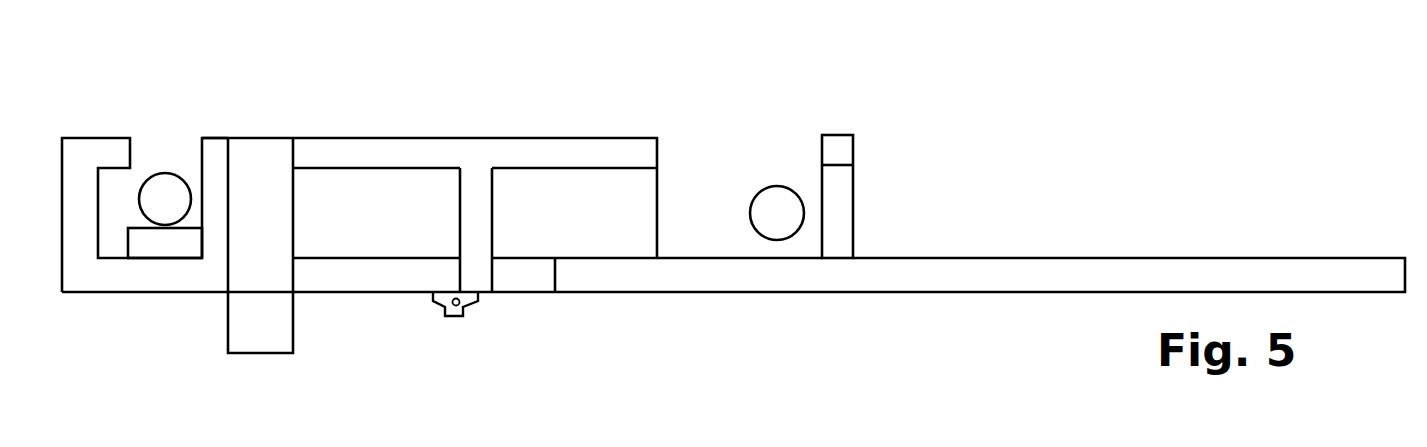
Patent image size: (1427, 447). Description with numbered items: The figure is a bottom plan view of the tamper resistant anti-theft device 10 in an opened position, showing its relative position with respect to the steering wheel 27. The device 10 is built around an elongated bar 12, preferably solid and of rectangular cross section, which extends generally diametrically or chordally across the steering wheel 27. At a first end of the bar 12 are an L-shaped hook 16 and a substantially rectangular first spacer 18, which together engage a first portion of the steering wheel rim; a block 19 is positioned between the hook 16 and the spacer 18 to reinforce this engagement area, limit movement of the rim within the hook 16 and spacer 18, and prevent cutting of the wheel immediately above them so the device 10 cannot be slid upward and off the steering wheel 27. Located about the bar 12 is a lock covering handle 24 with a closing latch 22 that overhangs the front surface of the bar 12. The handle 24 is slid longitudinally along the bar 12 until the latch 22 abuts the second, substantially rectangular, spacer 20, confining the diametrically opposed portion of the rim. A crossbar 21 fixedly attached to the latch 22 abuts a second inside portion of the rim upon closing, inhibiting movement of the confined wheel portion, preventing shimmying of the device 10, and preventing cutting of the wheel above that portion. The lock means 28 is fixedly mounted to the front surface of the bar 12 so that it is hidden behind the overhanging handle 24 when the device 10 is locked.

The tamper resistant anti-theft device 10 is at (1103, 155).
The elongated bar 12 is at (1200, 267).
The L-shaped hook 16 is at (128, 137).
The first spacer 18 is at (220, 136).
The block 19 is at (160, 242).
The second spacer 20 is at (853, 202).
The crossbar 21 is at (492, 222).
The closing latch 22 is at (432, 137).
The lock covering handle 24 is at (292, 353).
The steering wheel 27 is at (165, 183).
The lock means 28 is at (460, 316).